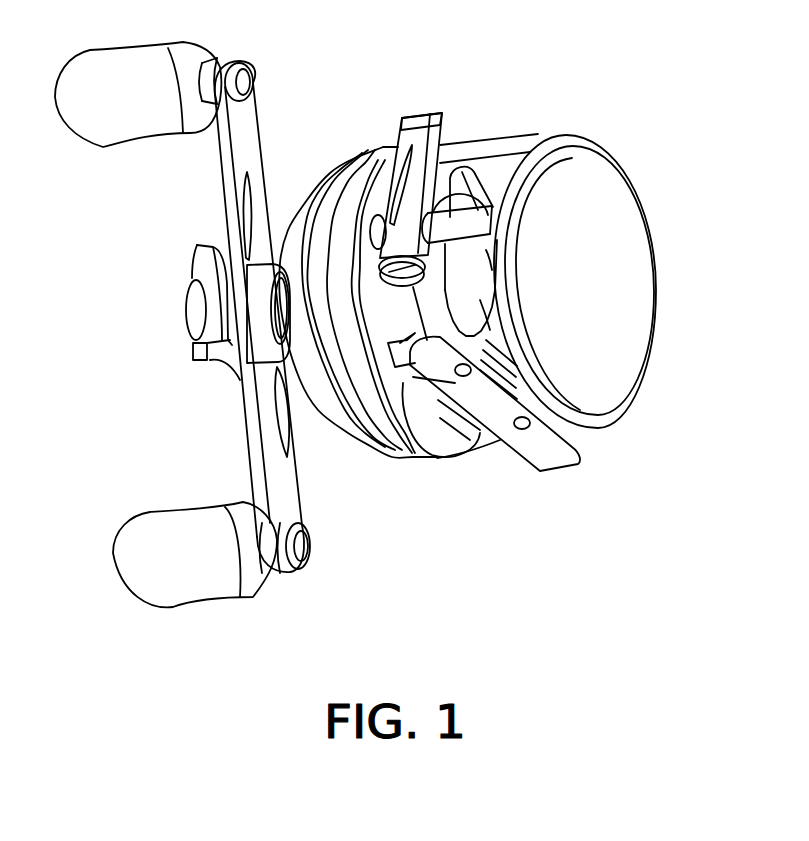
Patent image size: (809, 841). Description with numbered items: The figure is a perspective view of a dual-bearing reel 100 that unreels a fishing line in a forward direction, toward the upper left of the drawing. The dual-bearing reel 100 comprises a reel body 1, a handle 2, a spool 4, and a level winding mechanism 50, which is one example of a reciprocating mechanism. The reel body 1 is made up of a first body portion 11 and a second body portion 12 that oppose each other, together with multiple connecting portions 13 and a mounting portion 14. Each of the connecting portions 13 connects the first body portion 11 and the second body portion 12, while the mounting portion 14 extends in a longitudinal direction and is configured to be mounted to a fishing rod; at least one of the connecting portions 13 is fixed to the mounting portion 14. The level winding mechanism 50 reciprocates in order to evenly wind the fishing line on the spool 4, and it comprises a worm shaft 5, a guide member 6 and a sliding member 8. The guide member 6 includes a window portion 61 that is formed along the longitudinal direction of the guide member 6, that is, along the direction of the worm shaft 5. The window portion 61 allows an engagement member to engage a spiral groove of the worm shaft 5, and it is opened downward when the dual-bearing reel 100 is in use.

The dual-bearing reel 100 is at (681, 125).
The reel body 1 is at (521, 120).
The handle 2 is at (223, 172).
The spool 4 is at (493, 276).
The worm shaft 5 is at (493, 260).
The guide member 6 is at (478, 217).
The sliding member 8 is at (413, 117).
The first body portion 11 is at (367, 147).
The second body portion 12 is at (552, 133).
The connecting portion 13 is at (392, 287).
The mounting portion 14 is at (578, 440).
The level winding mechanism 50 is at (420, 107).
The window portion 61 is at (500, 243).